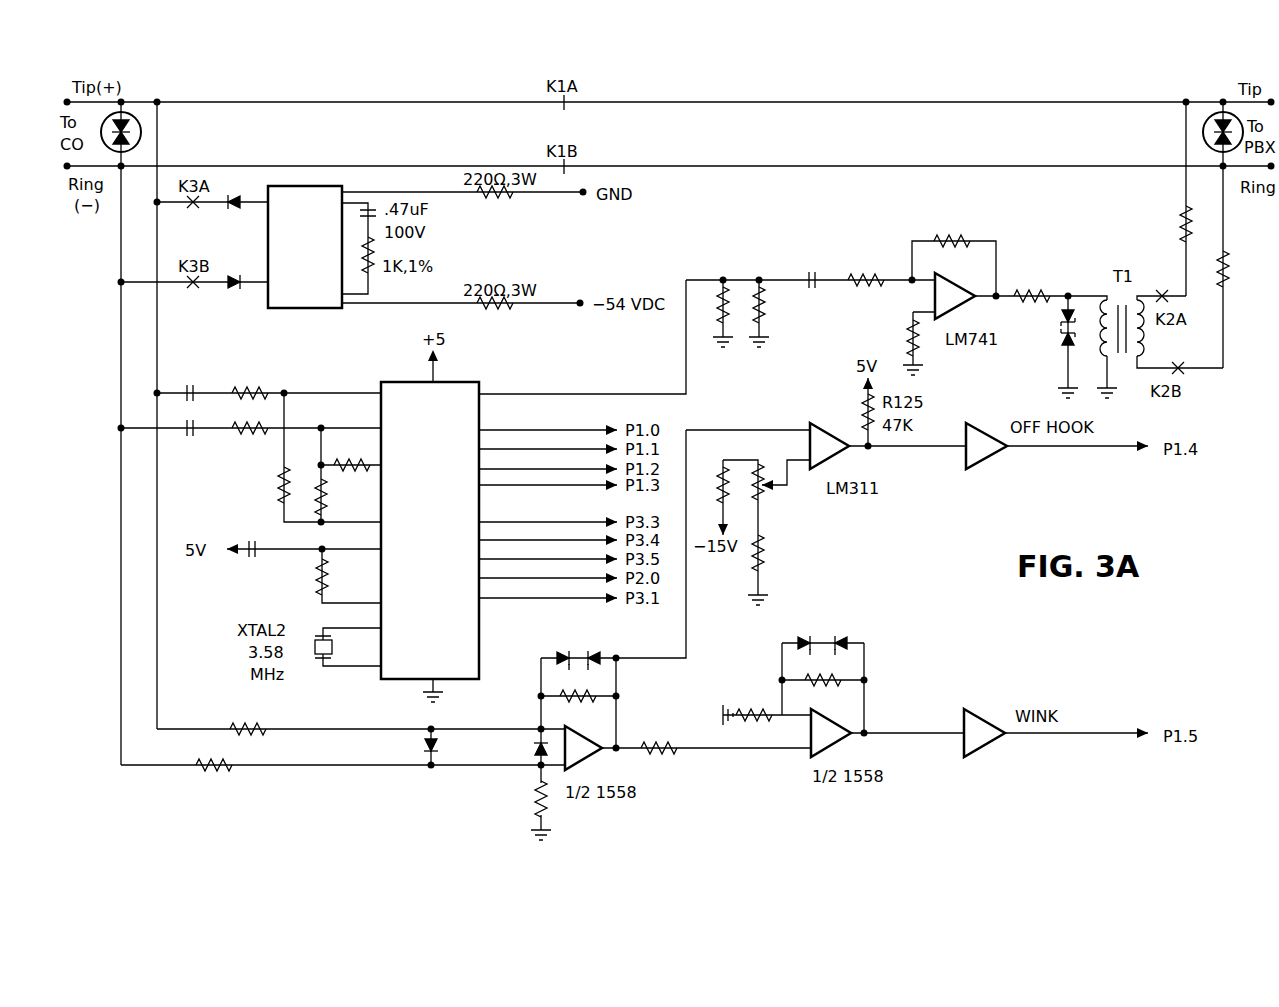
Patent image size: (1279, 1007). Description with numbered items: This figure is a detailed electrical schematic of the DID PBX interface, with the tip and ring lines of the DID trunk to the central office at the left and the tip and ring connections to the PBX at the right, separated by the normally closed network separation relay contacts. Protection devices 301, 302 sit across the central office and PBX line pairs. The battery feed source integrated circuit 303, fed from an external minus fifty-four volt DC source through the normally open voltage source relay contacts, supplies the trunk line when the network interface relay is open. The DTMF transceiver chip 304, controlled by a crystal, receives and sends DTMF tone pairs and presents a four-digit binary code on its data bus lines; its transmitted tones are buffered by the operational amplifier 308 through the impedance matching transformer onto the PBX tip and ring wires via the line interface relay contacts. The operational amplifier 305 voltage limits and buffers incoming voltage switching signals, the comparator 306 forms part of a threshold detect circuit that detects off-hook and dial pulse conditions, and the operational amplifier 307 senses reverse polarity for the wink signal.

The operational amplifier 301 is at (130, 116).
The surge protector (bidirectional diode) to PBX 302 is at (1213, 118).
The battery feed source integrated circuit 303 is at (299, 259).
The DTMF transceiver chip 304 is at (462, 380).
The operational amplifier 305 is at (598, 757).
The comparator 306 is at (830, 431).
The operational amplifier (1/2 1558) 307 is at (844, 744).
The LM741 operational amplifier 308 is at (972, 306).